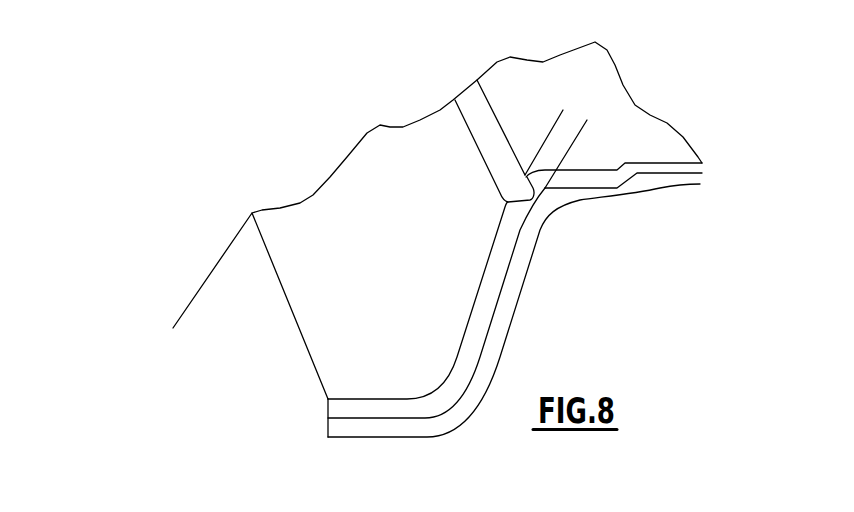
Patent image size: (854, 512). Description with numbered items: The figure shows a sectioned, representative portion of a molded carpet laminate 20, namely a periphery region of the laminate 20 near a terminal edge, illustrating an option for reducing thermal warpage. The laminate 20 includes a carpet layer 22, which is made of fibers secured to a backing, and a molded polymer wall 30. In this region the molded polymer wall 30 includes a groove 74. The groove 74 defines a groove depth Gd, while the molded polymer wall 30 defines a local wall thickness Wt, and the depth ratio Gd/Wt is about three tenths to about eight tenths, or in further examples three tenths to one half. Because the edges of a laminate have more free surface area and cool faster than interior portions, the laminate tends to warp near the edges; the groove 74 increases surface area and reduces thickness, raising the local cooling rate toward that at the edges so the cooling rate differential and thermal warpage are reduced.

The laminate 20 is at (347, 345).
The carpet layer 22 is at (648, 184).
The molded polymer wall 30 is at (479, 285).
The groove 74 is at (485, 191).
The local wall thickness Wt is at (578, 200).
The groove depth Gd is at (527, 168).